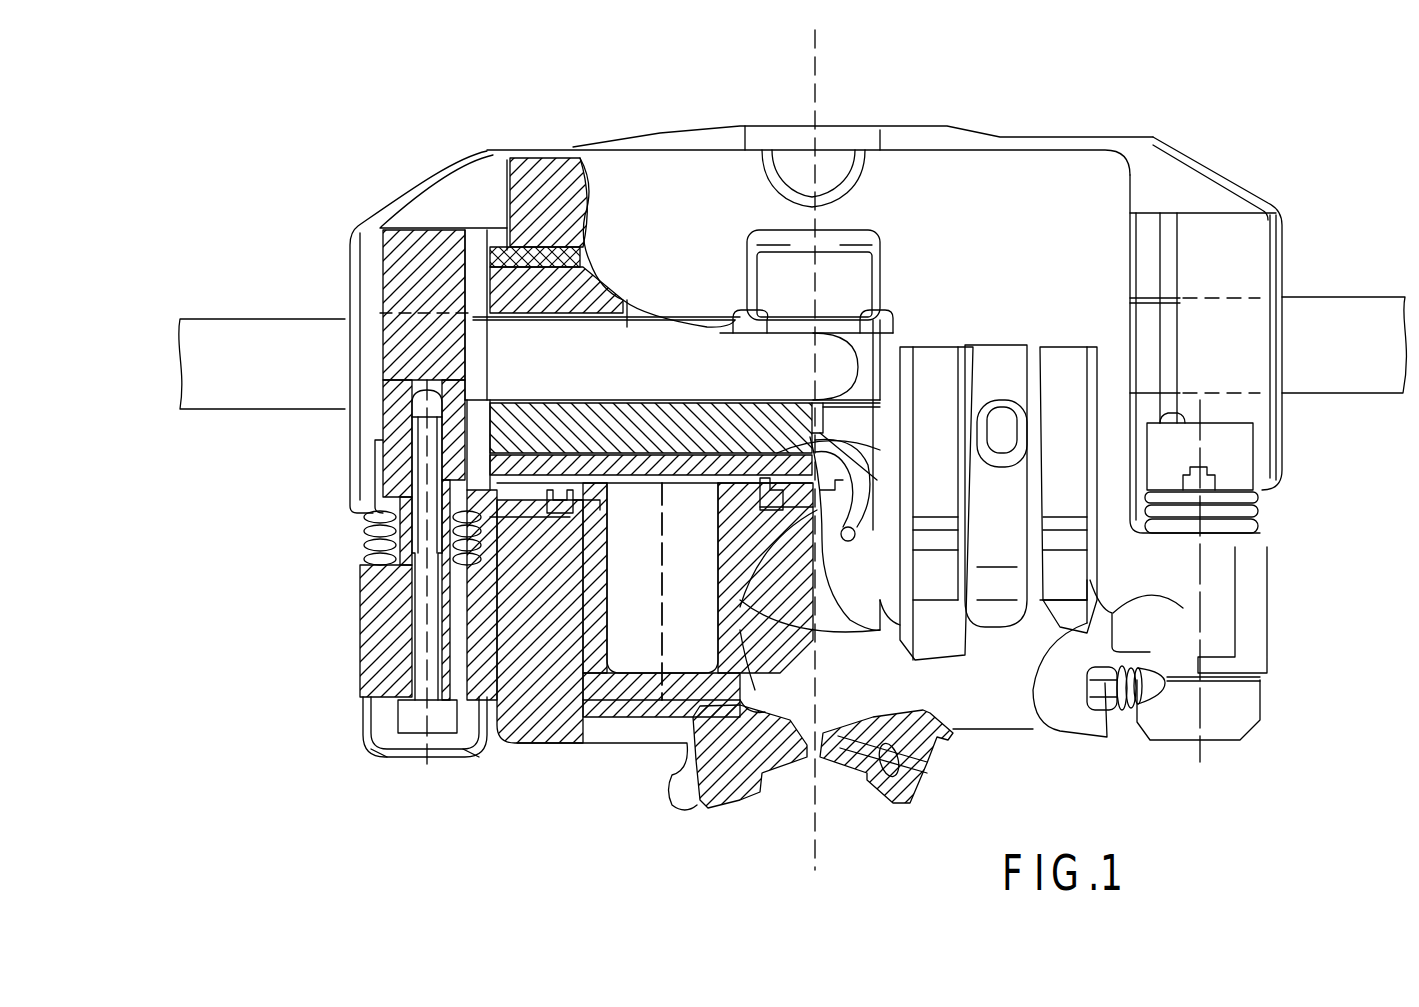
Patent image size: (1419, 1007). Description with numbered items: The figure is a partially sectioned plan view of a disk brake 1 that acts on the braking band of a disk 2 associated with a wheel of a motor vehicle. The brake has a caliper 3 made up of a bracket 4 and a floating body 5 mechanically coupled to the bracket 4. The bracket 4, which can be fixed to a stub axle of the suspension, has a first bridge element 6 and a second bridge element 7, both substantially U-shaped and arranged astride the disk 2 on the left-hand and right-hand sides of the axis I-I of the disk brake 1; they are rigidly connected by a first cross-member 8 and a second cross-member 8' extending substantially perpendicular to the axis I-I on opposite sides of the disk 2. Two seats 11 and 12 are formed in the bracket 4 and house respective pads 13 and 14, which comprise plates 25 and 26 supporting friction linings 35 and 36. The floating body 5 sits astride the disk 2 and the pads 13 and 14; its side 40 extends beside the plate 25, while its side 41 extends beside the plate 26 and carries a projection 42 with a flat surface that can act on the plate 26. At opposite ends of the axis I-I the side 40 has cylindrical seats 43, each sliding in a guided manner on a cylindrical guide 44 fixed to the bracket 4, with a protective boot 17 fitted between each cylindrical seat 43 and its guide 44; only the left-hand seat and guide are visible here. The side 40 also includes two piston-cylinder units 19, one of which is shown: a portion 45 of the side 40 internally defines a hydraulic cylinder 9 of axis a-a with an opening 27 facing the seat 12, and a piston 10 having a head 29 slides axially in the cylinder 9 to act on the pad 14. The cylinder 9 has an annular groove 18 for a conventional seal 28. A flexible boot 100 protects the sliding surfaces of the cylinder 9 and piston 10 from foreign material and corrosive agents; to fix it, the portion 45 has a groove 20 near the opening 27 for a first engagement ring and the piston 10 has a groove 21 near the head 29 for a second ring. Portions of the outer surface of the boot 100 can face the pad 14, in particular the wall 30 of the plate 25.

The disk brake 1 is at (858, 86).
The disk 2 is at (1297, 298).
The caliper 3 is at (1190, 150).
The bracket 4 is at (468, 154).
The floating body 5 is at (513, 736).
The first bridge element 6 is at (348, 457).
The second bridge element 7 is at (1283, 412).
The first cross-member 8 is at (820, 129).
The second cross-member 8' is at (1249, 487).
The hydraulic cylinder 9 is at (545, 705).
The piston 10 is at (770, 697).
The seat 11 is at (487, 300).
The seat 12 is at (496, 430).
The pad 13 is at (576, 320).
The pad 14 is at (655, 397).
The protective boot 17 is at (1260, 518).
The annular groove 18 is at (742, 600).
The piston-cylinder unit 19 is at (697, 713).
The groove 20 is at (720, 538).
The groove 21 is at (605, 530).
The plate 25 is at (813, 520).
The plate 26 is at (582, 260).
The opening 27 is at (812, 510).
The seal 28 is at (775, 560).
The head 29 is at (607, 497).
The wall 30 is at (707, 480).
The friction lining 35 is at (722, 420).
The friction lining 36 is at (630, 312).
The side 40 is at (628, 745).
The side 41 is at (518, 154).
The projection 42 is at (575, 187).
The cylindrical seat 43 is at (383, 630).
The cylindrical guide 44 is at (395, 578).
The portion 45 is at (585, 745).
The flexible boot 100 is at (782, 462).
The axis a- a is at (675, 587).
The axis I- I is at (803, 450).